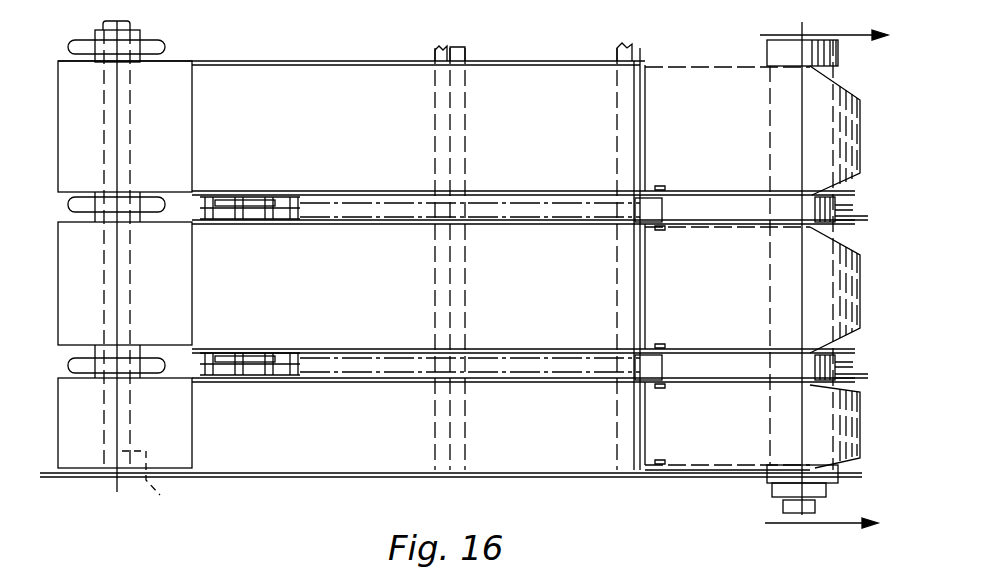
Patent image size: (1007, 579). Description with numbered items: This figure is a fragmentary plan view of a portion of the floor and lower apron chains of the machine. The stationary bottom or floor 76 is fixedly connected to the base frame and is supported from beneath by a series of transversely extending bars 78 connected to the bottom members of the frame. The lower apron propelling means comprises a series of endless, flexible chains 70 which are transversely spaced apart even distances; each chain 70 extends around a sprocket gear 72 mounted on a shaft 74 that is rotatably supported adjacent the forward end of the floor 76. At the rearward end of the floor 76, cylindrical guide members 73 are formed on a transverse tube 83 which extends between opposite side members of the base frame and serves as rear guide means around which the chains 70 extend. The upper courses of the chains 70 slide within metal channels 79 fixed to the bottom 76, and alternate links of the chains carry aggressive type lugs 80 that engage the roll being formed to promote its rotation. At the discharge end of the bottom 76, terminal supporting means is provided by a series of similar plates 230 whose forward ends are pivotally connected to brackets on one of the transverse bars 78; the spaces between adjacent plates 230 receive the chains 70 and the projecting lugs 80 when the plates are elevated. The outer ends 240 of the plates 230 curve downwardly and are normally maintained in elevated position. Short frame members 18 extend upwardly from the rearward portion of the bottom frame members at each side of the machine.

The short frame member 18 is at (536, 497).
The endless flexible chain 70 is at (252, 190).
The sprocket gear 72 is at (74, 44).
The cylindrical guide member 73 is at (835, 197).
The shaft 74 is at (162, 497).
The bottom or floor 76 is at (342, 462).
The transversely extending bar 78 is at (462, 128).
The metal channel 79 is at (532, 225).
The aggressive type lug 80 is at (862, 222).
The transverse tube 83 is at (772, 429).
The plate 230 is at (670, 88).
The outer end of plate 240 is at (844, 100).